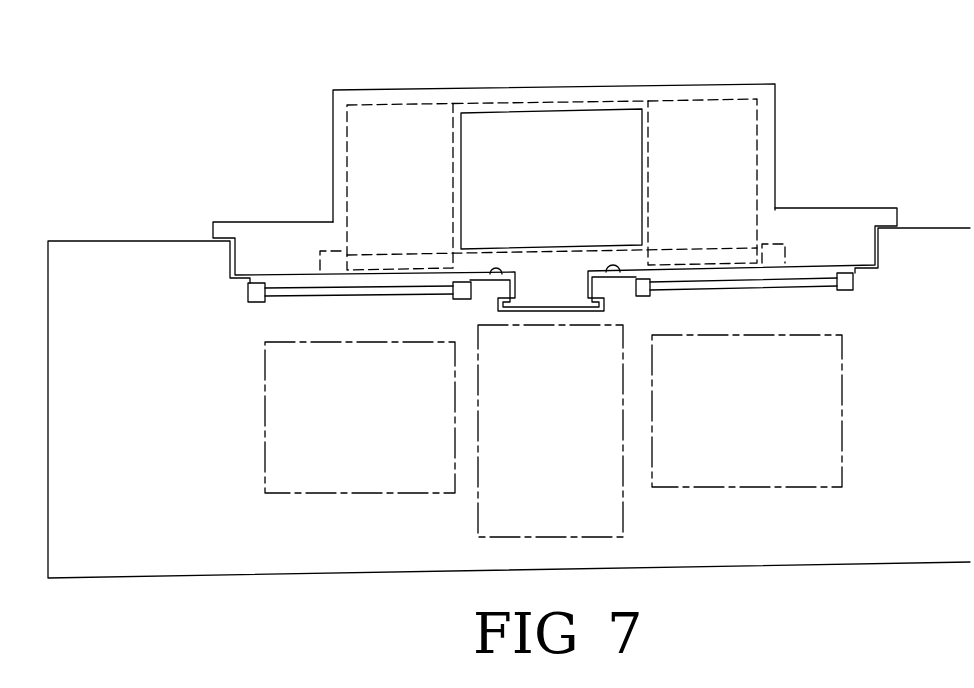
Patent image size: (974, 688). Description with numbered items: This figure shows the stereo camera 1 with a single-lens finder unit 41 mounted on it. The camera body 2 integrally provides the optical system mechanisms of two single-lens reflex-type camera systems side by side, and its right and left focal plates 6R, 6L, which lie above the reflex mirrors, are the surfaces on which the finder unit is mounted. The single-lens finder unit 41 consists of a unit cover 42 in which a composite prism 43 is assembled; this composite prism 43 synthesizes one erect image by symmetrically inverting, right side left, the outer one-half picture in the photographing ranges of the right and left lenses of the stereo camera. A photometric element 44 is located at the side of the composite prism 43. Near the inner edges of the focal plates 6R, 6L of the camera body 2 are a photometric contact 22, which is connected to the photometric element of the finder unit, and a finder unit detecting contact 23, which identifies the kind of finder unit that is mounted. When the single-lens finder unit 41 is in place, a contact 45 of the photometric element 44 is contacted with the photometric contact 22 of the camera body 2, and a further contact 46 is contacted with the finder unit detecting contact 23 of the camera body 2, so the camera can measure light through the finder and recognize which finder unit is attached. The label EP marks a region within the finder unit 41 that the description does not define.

The stereo camera 1 is at (265, 115).
The camera body 2 is at (87, 227).
The left focal plate 6L is at (282, 285).
The right focal plate 6R is at (820, 278).
The photometric contact 22 is at (731, 210).
The finder unit detecting contact 23 is at (375, 214).
The single-lens finder unit 41 is at (549, 70).
The unit cover 42 is at (400, 90).
The composite prism 43 is at (351, 121).
The photometric element 44 is at (783, 242).
The contact of the photometric element 45 is at (616, 271).
The contact 46 is at (492, 273).
The eye point EP is at (598, 128).